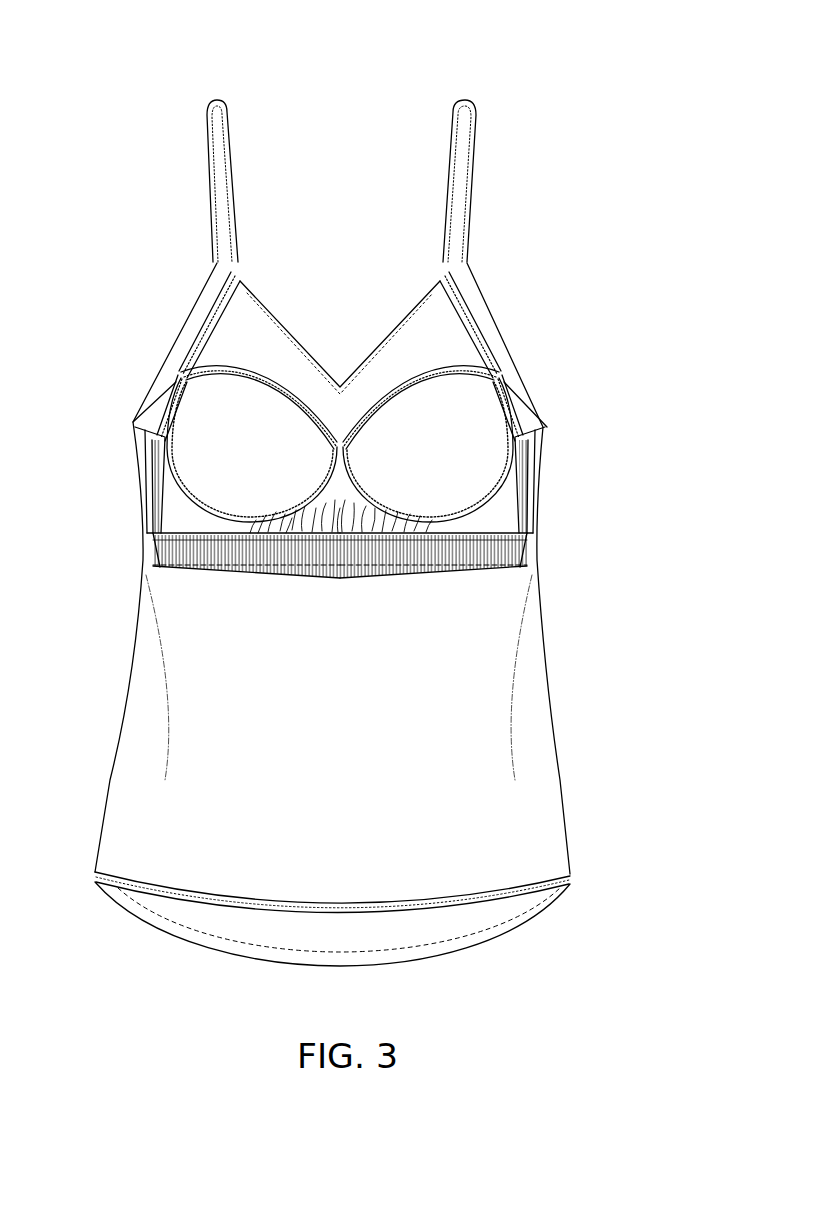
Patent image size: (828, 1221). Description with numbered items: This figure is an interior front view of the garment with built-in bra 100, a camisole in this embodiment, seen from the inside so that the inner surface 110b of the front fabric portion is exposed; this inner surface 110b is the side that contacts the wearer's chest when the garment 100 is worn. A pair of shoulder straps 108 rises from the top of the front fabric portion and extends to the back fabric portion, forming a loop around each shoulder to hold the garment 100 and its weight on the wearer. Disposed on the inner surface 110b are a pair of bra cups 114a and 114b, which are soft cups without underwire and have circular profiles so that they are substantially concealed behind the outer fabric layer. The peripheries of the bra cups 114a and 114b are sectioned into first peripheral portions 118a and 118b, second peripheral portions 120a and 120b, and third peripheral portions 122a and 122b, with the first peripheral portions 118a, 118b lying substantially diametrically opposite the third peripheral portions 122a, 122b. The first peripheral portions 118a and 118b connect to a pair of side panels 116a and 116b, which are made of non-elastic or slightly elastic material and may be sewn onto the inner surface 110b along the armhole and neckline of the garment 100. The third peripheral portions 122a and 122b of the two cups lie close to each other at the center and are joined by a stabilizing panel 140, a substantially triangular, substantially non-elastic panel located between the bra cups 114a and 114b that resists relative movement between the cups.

The garment with built-in bra 100 is at (640, 983).
The pair of shoulder straps 108 is at (457, 112).
The inner surface 110b is at (372, 757).
The bra cup 114a is at (208, 407).
The bra cup 114b is at (460, 410).
The side panel 116a is at (192, 313).
The side panel 116b is at (490, 313).
The first peripheral portion 118a is at (136, 429).
The first peripheral portion 118b is at (545, 425).
The second peripheral portion 120a is at (177, 487).
The second peripheral portion 120b is at (498, 483).
The third peripheral portion 122a is at (262, 519).
The third peripheral portion 122b is at (418, 519).
The stabilizing panel 140 is at (347, 517).